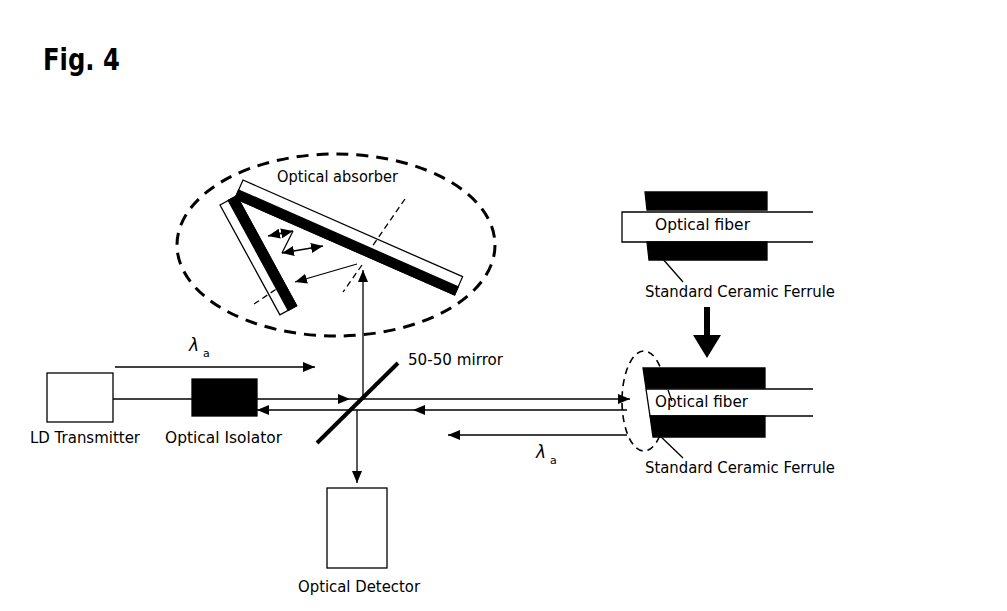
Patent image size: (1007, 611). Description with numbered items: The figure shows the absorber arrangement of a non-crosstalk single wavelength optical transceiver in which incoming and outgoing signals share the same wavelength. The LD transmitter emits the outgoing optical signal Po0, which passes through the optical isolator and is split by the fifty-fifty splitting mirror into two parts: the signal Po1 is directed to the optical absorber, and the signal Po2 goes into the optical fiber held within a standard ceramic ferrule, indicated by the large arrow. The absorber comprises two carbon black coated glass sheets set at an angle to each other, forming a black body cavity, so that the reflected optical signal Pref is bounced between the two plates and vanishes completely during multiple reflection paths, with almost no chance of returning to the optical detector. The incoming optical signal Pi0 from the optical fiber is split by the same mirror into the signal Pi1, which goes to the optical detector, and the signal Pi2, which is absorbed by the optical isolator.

The optical signal transmitted from the LD transmitter Po0 is at (310, 388).
The split outgoing optical signal directed to the optical absorber Po1 is at (348, 334).
The split outgoing optical signal directed into the optical fiber Po2 is at (496, 387).
The incoming optical signal Pi0 is at (492, 416).
The split incoming optical signal directed to the optical detector Pi1 is at (371, 446).
The split incoming optical signal directed to the optical isolator Pi2 is at (307, 418).
The reflected optical signal Pref is at (312, 256).